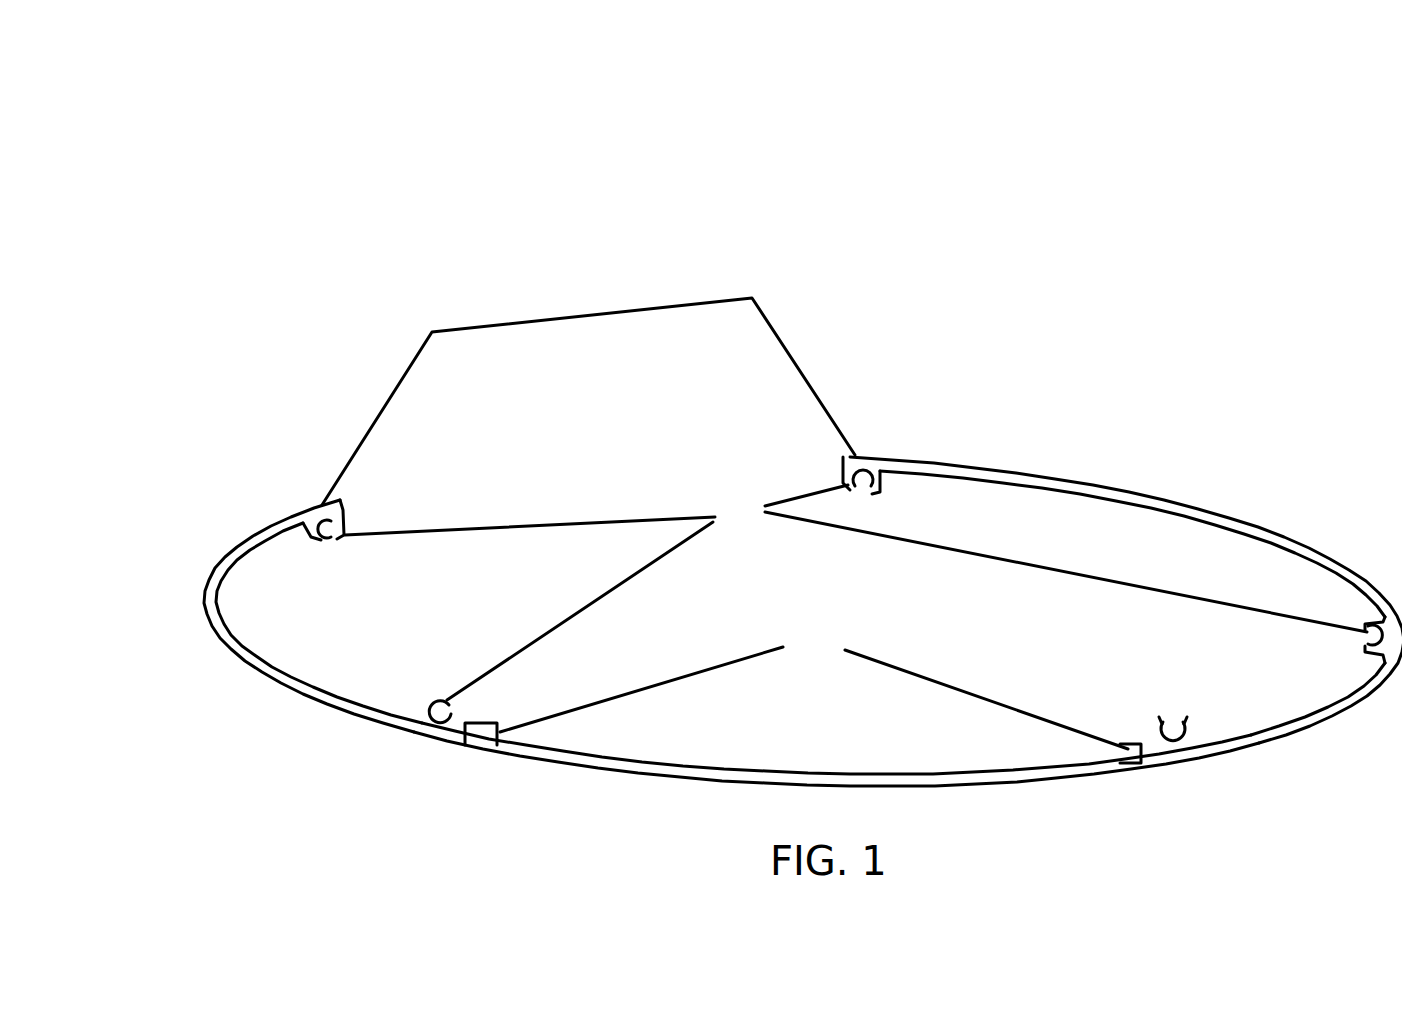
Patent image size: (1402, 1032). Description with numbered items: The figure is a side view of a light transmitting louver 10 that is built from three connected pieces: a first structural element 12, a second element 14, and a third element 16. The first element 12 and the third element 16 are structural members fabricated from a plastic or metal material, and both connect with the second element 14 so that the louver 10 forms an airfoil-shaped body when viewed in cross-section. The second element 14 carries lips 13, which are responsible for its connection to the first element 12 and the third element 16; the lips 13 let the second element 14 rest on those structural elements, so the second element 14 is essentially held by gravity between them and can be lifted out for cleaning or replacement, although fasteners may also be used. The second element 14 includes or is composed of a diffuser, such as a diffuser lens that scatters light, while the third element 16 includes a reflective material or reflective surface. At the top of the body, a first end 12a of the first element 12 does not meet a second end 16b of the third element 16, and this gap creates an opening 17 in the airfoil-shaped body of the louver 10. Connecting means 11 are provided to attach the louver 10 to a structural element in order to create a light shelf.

The light transmitting louver 10 is at (160, 195).
The connecting means 11 is at (856, 592).
The first structural element 12 is at (215, 632).
The first end 12a is at (290, 518).
The lips 13 is at (814, 688).
The second element 14 is at (930, 787).
The third element 16 is at (1227, 503).
The second end 16b is at (897, 452).
The opening 17 is at (588, 391).